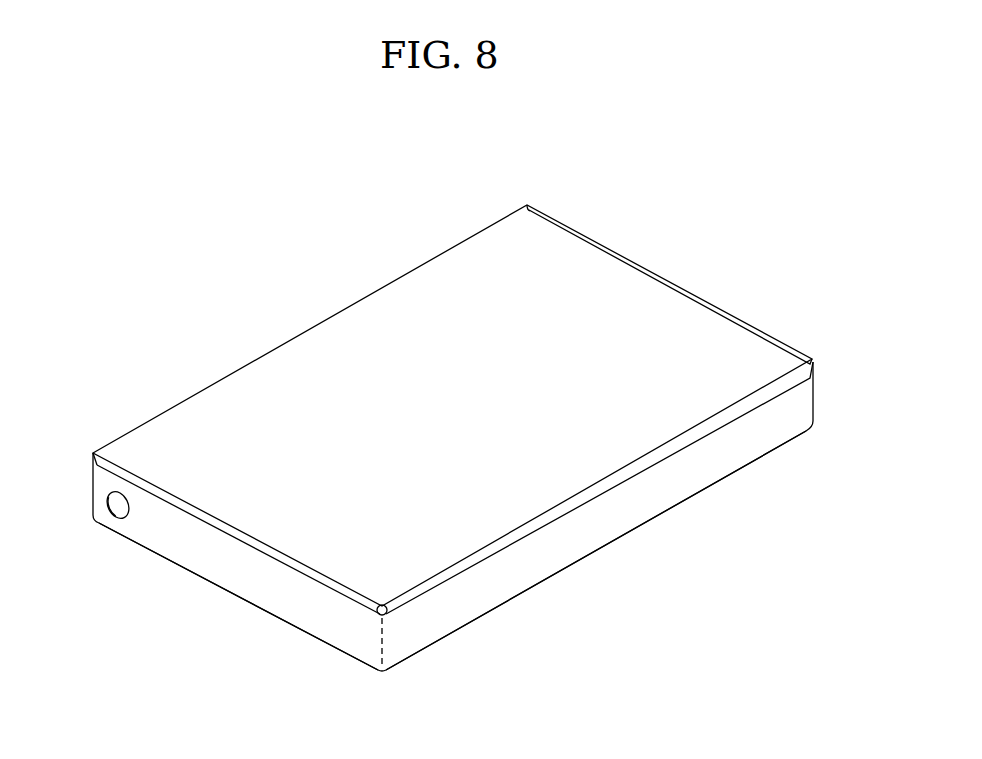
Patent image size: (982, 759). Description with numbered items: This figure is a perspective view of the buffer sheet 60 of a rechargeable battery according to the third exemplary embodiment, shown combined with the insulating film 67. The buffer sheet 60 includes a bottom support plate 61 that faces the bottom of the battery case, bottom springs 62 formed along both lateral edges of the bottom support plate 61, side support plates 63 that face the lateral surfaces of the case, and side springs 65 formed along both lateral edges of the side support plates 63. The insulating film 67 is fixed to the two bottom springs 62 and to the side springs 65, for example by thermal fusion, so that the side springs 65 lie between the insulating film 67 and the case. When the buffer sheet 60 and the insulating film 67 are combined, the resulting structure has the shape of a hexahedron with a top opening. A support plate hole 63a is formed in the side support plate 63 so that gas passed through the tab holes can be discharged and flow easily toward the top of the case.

The buffer sheet 60 is at (453, 646).
The bottom support plate 61 is at (643, 508).
The bottom springs 62 is at (530, 532).
The side support plates 63 is at (327, 618).
The support plate hole 63a is at (120, 506).
The side springs 65 is at (233, 533).
The insulating film 67 is at (330, 342).